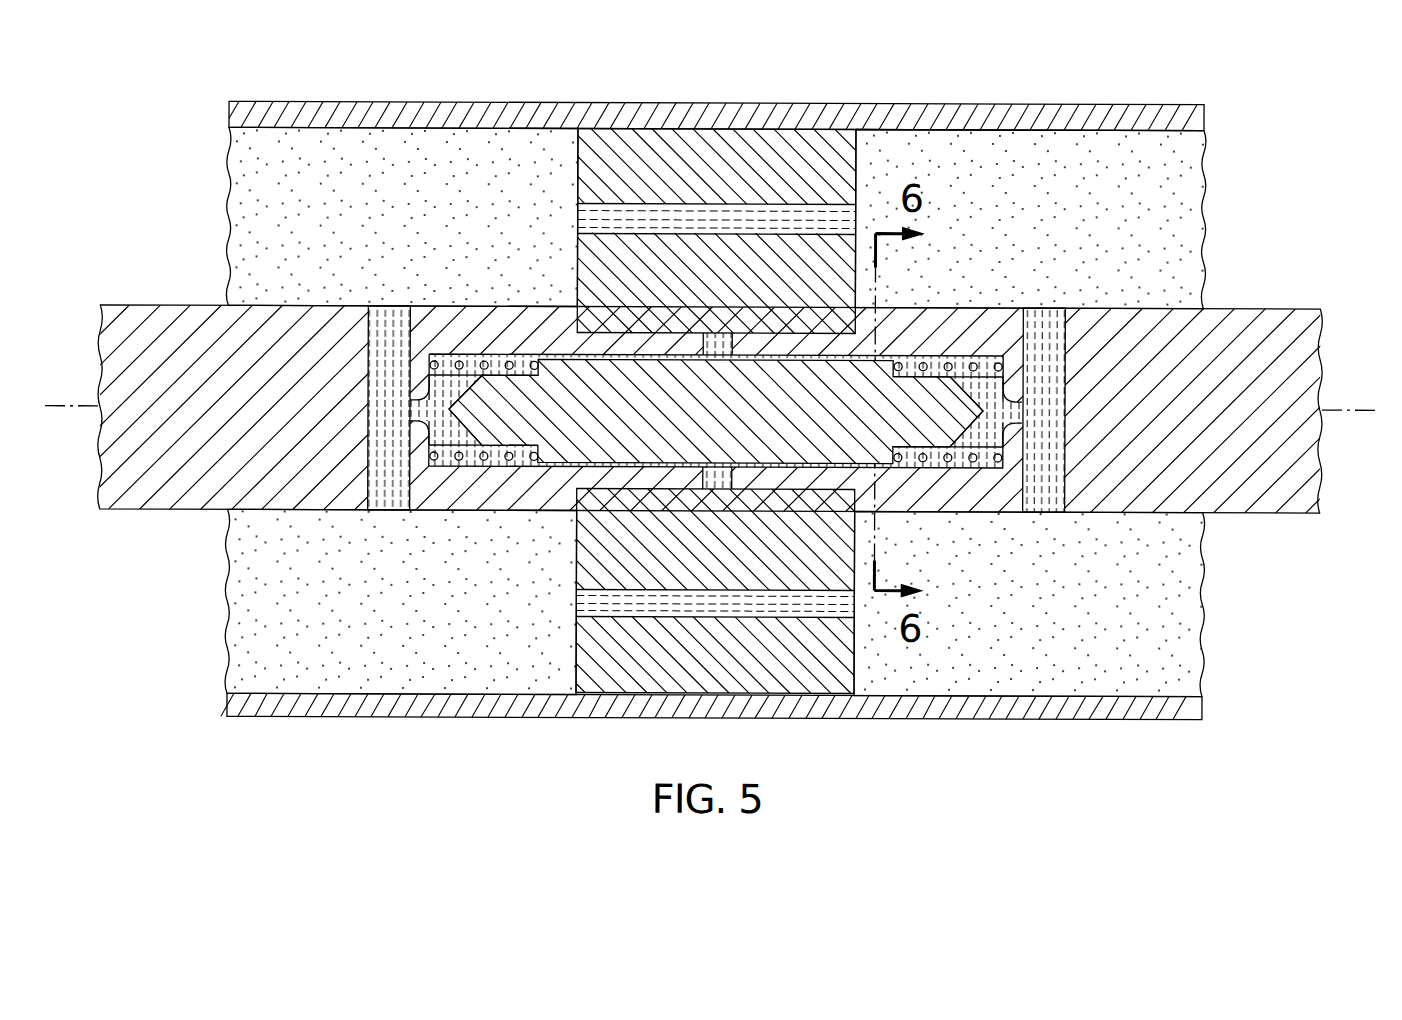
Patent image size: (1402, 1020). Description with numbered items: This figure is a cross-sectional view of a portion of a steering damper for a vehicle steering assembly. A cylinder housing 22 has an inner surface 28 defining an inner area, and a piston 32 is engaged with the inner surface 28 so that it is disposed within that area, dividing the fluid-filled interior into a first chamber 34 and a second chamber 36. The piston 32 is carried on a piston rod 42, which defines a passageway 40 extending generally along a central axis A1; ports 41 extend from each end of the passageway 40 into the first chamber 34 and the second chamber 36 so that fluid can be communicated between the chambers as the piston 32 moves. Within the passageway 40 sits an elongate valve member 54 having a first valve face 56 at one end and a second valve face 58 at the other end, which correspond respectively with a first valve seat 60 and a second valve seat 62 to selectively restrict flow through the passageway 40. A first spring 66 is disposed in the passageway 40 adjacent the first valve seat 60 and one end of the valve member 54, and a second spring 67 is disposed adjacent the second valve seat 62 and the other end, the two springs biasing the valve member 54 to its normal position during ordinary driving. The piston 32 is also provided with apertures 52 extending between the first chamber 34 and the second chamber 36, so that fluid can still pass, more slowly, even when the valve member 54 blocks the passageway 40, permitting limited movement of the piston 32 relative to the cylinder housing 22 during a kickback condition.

The cylinder housing 22 is at (996, 106).
The inner surface 28 is at (1058, 143).
The piston 32 is at (736, 176).
The first chamber 34 is at (411, 209).
The second chamber 36 is at (1055, 211).
The passageway 40 is at (441, 412).
The ports 41 is at (408, 304).
The piston rod 42 is at (240, 424).
The apertures 52 is at (778, 234).
The valve member 54 is at (733, 422).
The first valve face 56 is at (466, 393).
The second valve face 58 is at (966, 395).
The first valve seat 60 is at (428, 400).
The second valve seat 62 is at (1004, 398).
The first spring 66 is at (484, 361).
The second spring 67 is at (948, 362).
The central axis A1 is at (1348, 408).